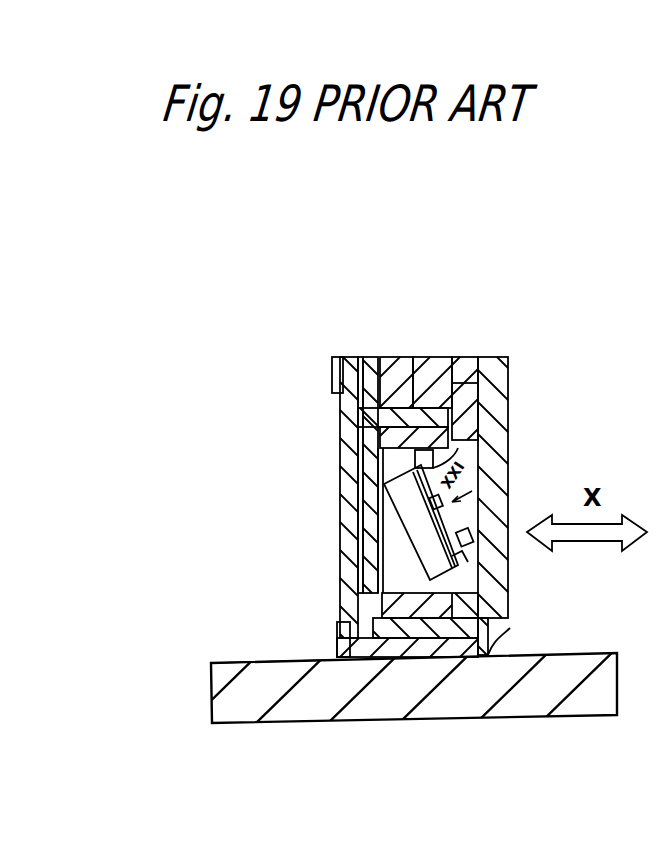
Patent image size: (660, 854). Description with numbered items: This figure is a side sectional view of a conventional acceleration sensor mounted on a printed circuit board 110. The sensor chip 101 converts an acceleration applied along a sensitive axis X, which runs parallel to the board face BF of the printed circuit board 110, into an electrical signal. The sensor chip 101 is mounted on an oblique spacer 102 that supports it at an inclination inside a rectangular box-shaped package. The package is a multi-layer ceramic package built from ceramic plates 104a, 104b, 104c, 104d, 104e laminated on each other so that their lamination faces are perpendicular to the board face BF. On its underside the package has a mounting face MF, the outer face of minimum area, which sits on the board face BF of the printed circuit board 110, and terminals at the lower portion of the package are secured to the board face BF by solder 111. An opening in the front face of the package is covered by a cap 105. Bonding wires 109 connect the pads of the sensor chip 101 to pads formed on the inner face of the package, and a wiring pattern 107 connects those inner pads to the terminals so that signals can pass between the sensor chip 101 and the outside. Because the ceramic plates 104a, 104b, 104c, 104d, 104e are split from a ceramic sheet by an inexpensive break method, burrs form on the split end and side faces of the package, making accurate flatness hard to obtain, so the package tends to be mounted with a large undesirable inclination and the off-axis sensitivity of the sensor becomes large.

The ceramic plate 104a is at (340, 355).
The ceramic plate 104b is at (366, 356).
The ceramic plate 104c is at (395, 356).
The ceramic plate 104d is at (433, 356).
The ceramic plate 104e is at (470, 356).
The wiring pattern 107 is at (360, 413).
The sensor chip 101 is at (396, 497).
The oblique spacer 102 is at (389, 537).
The bonding wires 109 is at (440, 467).
The cap 105 is at (495, 466).
The solder 111 is at (488, 648).
The printed circuit board 110 is at (228, 707).
The board face BF is at (268, 662).
The mounting face MF is at (480, 625).